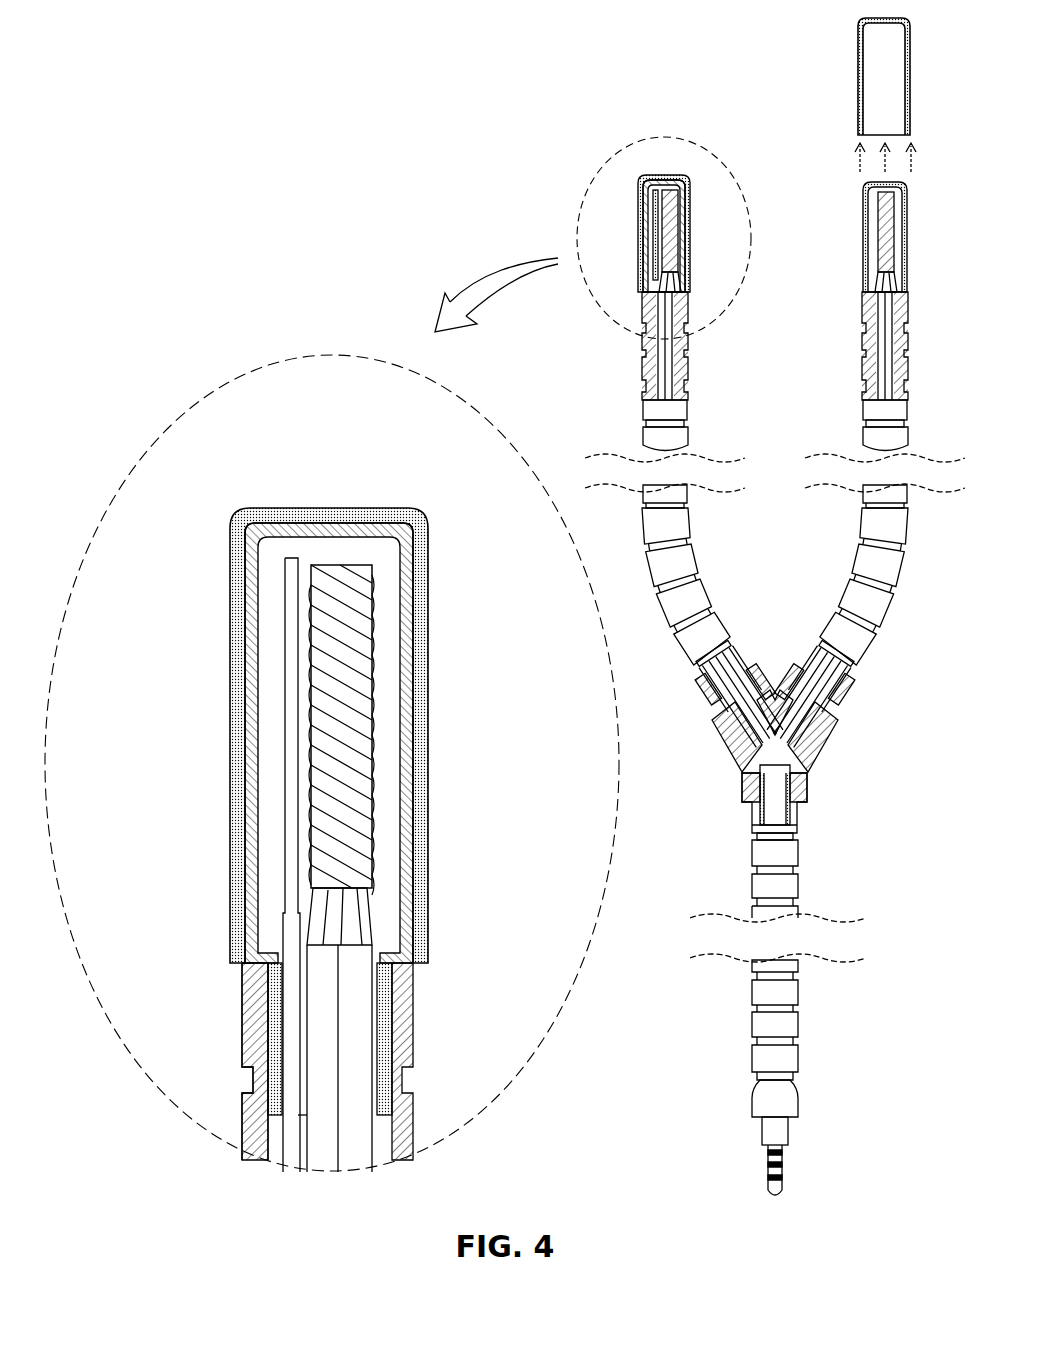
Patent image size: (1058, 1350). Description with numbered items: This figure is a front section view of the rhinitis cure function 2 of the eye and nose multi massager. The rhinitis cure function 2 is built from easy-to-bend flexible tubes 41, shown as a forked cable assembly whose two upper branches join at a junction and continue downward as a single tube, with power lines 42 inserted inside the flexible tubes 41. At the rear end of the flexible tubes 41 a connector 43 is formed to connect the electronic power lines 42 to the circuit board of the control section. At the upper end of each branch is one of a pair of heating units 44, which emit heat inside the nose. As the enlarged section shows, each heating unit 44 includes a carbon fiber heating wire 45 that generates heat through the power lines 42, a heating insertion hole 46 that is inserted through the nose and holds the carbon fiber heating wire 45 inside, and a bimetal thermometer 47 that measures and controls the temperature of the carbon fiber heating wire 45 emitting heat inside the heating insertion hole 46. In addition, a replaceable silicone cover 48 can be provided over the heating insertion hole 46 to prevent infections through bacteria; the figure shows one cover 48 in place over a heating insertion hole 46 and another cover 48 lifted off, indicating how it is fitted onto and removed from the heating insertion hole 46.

The rhinitis cure function 2 is at (533, 157).
The flexible tube 41 is at (413, 1040).
The power line 42 is at (807, 790).
The connector 43 is at (788, 1130).
The heating unit 44 is at (487, 553).
The carbon fiber heating wire 45 is at (357, 645).
The heating insertion hole 46 is at (412, 566).
The bimetal thermometer 47 is at (292, 672).
The replaceable silicone cover 48 is at (288, 510).